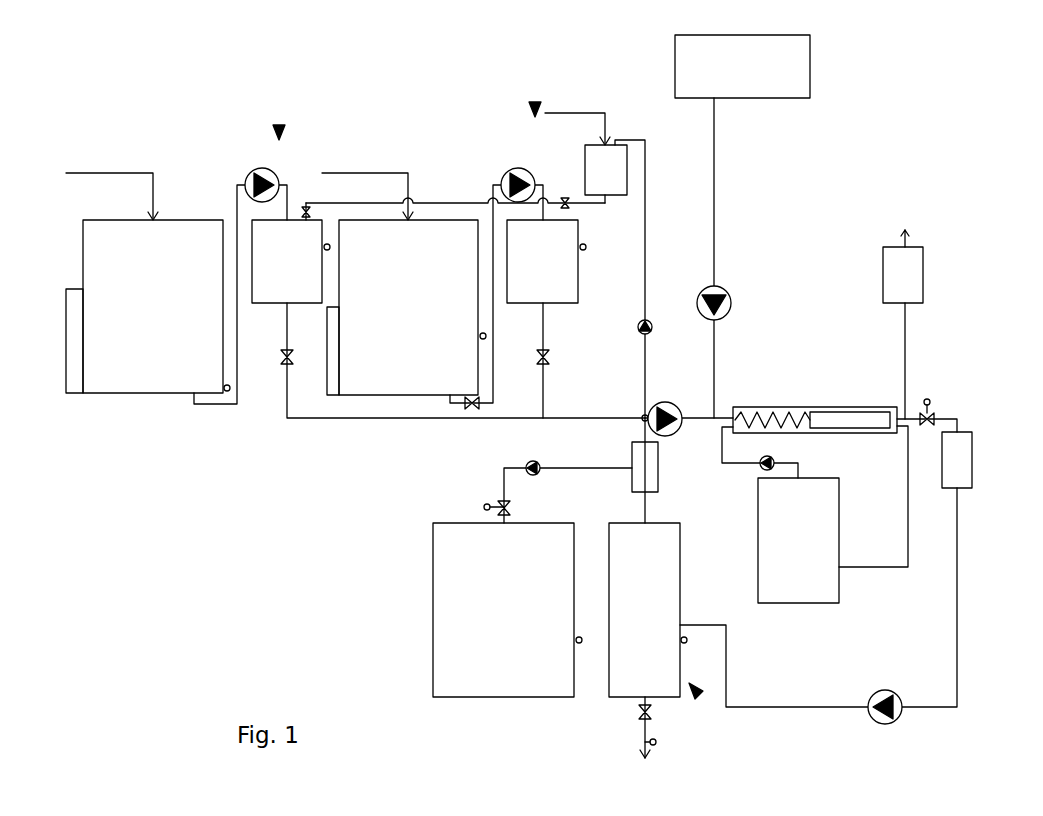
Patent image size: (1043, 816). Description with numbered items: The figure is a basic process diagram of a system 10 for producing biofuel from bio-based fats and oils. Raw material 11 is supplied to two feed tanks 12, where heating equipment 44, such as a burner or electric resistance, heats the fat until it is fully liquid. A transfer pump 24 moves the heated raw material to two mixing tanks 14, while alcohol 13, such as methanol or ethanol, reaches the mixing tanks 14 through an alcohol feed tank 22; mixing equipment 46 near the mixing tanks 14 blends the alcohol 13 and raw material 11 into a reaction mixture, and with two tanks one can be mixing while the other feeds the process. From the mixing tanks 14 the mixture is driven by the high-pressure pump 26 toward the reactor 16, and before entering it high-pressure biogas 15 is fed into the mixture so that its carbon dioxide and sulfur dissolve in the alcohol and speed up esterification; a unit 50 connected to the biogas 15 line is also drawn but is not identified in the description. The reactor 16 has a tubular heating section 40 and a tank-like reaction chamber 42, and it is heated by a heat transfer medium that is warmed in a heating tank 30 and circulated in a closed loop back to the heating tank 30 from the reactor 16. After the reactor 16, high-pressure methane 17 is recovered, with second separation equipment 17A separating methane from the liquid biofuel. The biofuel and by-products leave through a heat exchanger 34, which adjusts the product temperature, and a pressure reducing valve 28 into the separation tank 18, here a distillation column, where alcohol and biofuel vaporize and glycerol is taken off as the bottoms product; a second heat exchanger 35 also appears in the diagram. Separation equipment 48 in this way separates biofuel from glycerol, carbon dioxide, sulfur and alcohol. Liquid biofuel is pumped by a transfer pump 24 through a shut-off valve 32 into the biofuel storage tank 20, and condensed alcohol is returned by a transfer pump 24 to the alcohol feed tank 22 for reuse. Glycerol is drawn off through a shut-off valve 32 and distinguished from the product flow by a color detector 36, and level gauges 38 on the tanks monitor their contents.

The system 10 is at (738, 206).
The raw material 11 is at (130, 173).
The feed tank 12 is at (280, 307).
The alcohol 13 is at (572, 112).
The mixing tank 14 is at (415, 261).
The biogas 15 is at (716, 255).
The reactor 16 is at (785, 410).
The methane 17 is at (907, 325).
The second separation equipment 17A is at (907, 268).
The separation tank 18 is at (644, 557).
The biofuel storage tank 20 is at (503, 610).
The alcohol feed tank 22 is at (606, 170).
The transfer pump 24 is at (265, 170).
The high-pressure pump 26 is at (680, 408).
The pressure reducing valve 28 is at (930, 401).
The heating tank 30 is at (798, 540).
The shut-off valve 32 is at (306, 205).
The heat exchanger 34 is at (966, 460).
The second heat exchanger 35 is at (655, 462).
The color detector 36 is at (657, 744).
The level gauge 38 is at (237, 382).
The tubular heating section 40 is at (776, 413).
The reaction chamber 42 is at (858, 422).
The heating equipment 44 is at (75, 330).
The mixing equipment 46 is at (279, 126).
The separation equipment 48 is at (697, 692).
The controller 50 is at (742, 66).